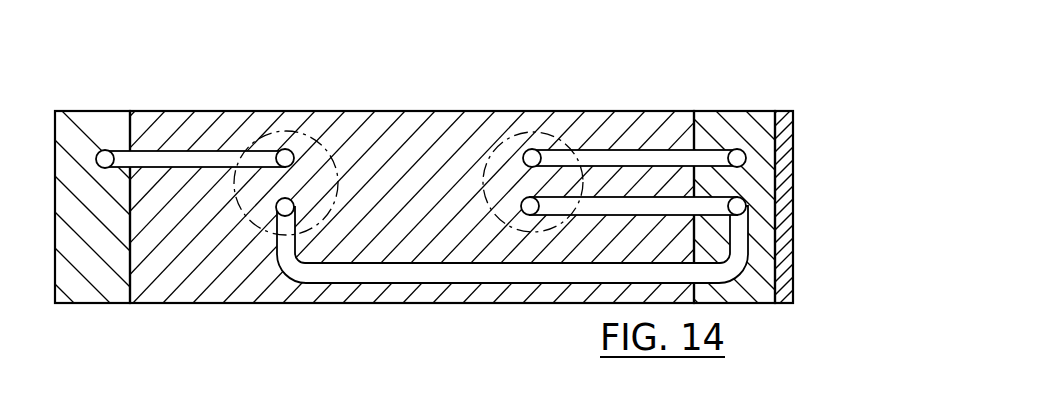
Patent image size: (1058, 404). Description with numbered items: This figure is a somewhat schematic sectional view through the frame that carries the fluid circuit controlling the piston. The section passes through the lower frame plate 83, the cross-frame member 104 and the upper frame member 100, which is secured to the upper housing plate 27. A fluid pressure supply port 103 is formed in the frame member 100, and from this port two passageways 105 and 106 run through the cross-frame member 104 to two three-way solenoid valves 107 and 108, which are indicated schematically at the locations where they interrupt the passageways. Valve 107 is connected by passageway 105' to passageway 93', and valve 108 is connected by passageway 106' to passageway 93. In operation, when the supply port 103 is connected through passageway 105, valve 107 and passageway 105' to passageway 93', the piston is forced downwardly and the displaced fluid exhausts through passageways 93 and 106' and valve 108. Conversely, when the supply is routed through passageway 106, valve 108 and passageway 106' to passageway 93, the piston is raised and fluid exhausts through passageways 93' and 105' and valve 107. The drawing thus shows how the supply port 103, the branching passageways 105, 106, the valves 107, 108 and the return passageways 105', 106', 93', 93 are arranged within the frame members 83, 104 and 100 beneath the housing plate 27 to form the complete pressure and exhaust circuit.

The lower frame plate 83 is at (66, 200).
The passageway 93 is at (195, 114).
The passageway 93' is at (800, 140).
The upper frame member 100 is at (732, 122).
The fluid pressure supply port 103 is at (745, 206).
The cross-frame member 104 is at (410, 120).
The passageway 105 is at (633, 114).
The passageway 105' is at (649, 89).
The passageway 106 is at (512, 287).
The passageway 106' is at (195, 90).
The 3-way solenoid valve 107 is at (511, 131).
The 3-way solenoid valve 108 is at (358, 130).
The upper housing plate 27 is at (786, 168).